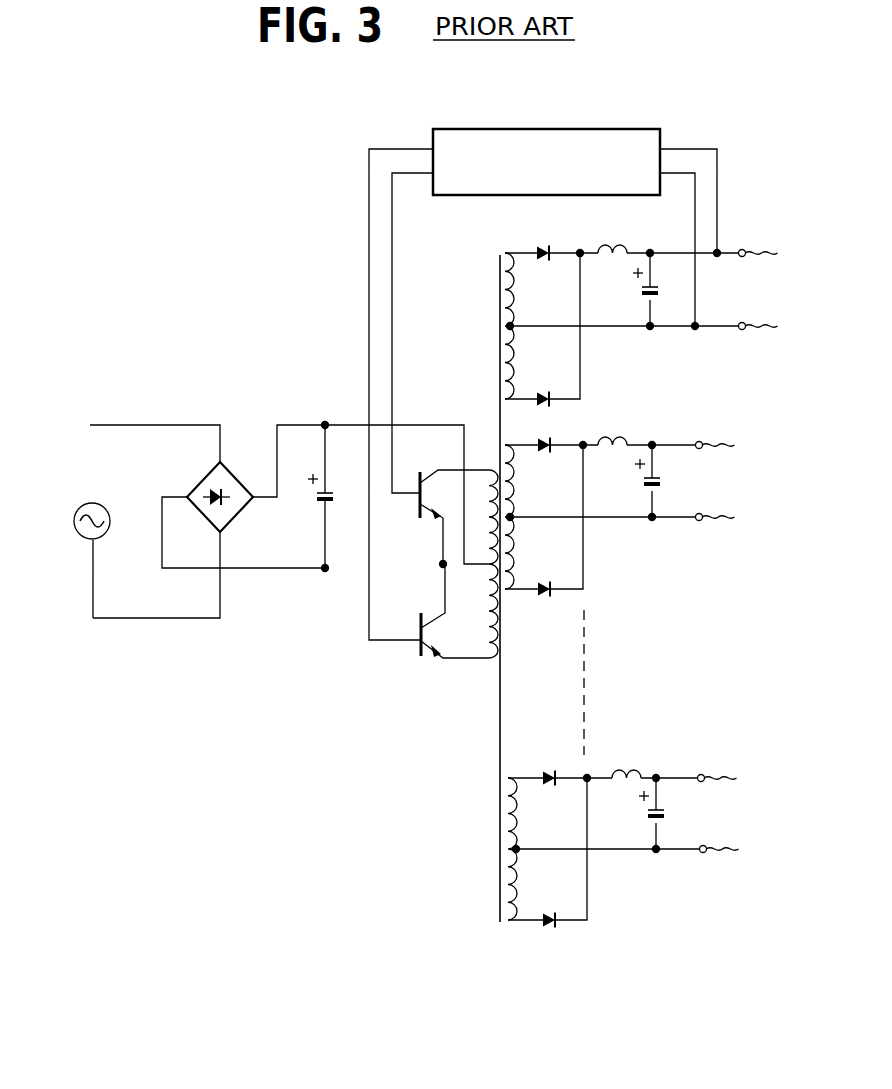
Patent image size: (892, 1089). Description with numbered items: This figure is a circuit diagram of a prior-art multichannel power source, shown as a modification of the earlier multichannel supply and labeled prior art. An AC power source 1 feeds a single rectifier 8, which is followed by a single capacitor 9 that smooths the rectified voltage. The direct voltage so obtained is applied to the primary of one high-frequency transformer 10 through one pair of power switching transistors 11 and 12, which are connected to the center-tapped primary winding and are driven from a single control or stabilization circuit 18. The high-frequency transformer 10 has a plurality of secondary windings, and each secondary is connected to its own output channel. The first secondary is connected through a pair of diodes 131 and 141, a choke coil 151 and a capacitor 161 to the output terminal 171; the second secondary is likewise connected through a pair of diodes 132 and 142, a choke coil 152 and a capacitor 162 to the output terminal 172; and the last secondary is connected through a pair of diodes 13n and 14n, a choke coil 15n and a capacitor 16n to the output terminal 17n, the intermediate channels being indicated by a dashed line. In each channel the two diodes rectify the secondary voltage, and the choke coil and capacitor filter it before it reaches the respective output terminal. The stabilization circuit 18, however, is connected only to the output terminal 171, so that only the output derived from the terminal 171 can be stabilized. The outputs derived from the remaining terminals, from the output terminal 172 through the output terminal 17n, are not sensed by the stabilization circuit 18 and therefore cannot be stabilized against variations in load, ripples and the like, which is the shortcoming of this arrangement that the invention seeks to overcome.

The AC power source 1 is at (76, 512).
The rectifier 8 is at (231, 471).
The capacitor 9 is at (315, 497).
The high-frequency transformer 10 is at (498, 344).
The power switching transistor 11 is at (431, 478).
The power switching transistor 12 is at (434, 662).
The control or stabilization circuit 18 is at (548, 129).
The diode 131 is at (545, 263).
The diode 141 is at (545, 388).
The choke coil 151 is at (614, 245).
The capacitor 161 is at (637, 290).
The output terminal 171 is at (781, 290).
The diode 132 is at (547, 456).
The diode 142 is at (546, 580).
The choke coil 152 is at (619, 438).
The capacitor 162 is at (642, 480).
The output terminal 172 is at (739, 481).
The diode 13n is at (548, 788).
The diode 14n is at (550, 912).
The choke coil 15n is at (622, 772).
The capacitor 16n is at (646, 811).
The output terminal 17n is at (744, 813).